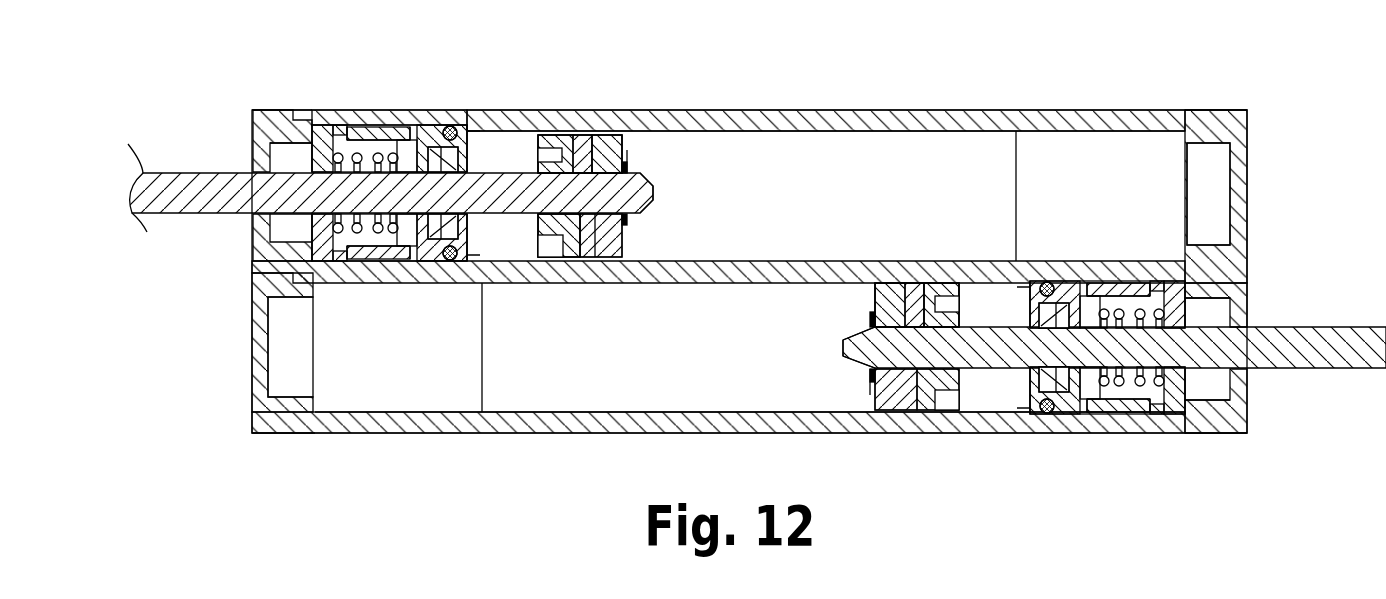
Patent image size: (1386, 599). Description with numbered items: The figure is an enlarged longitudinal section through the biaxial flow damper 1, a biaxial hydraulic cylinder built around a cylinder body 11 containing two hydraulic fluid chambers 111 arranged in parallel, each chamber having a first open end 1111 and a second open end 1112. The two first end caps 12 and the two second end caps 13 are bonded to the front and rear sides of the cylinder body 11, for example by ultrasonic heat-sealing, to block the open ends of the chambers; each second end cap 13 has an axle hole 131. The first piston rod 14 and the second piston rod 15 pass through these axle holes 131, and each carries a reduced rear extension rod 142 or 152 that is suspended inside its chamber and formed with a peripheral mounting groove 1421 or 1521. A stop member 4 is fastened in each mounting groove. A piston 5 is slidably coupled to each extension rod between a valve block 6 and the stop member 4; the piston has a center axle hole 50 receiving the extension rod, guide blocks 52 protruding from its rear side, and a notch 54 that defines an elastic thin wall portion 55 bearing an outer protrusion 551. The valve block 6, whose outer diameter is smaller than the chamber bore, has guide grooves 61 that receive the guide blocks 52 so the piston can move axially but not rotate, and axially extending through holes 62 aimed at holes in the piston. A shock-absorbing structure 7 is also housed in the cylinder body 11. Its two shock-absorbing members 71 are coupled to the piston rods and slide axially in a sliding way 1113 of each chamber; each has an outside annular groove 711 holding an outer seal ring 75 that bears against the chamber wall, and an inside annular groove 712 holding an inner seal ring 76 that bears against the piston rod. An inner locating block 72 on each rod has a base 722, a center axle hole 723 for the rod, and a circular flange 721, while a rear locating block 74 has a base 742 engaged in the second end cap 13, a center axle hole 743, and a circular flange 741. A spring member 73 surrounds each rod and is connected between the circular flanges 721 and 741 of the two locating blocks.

The biaxial flow damper 1 is at (1052, 102).
The cylinder body 11 is at (955, 120).
The hydraulic fluid chamber 111 is at (757, 126).
The first open end 1111 is at (1237, 108).
The second open end 1112 is at (300, 108).
The sliding way 1113 is at (471, 140).
The first end cap 12 is at (1248, 160).
The second end cap 13 is at (260, 125).
The axle hole 131 is at (290, 160).
The first piston rod 14 is at (1380, 326).
The reduced rear extension rod 142 is at (924, 300).
The mounting groove 1421 is at (866, 324).
The second piston rod 15 is at (164, 171).
The reduced rear extension rod 152 is at (590, 258).
The mounting groove 1521 is at (651, 195).
The stop member 4 is at (636, 166).
The piston 5 is at (620, 256).
The center axle hole 50 is at (632, 258).
The guide block 52 is at (572, 258).
The notch 54 is at (614, 150).
The elastic thin wall portion 55 is at (600, 160).
The outer protrusion 551 is at (570, 150).
The valve block 6 is at (520, 287).
The guide groove 61 is at (555, 258).
The axially extending through hole 62 is at (548, 150).
The shock-absorbing structure 7 is at (480, 158).
The shock-absorbing member 71 is at (440, 132).
The outside annular groove 711 is at (456, 153).
The inside annular groove 712 is at (432, 150).
The inner locating block 72 is at (385, 247).
The circular flange 721 is at (365, 249).
The base 722 is at (390, 235).
The center axle hole 723 is at (386, 138).
The spring member 73 is at (1185, 300).
The rear locating block 74 is at (318, 150).
The circular flange 741 is at (346, 153).
The base 742 is at (325, 140).
The center axle hole 743 is at (322, 227).
The outer seal ring 75 is at (450, 262).
The inner seal ring 76 is at (410, 240).